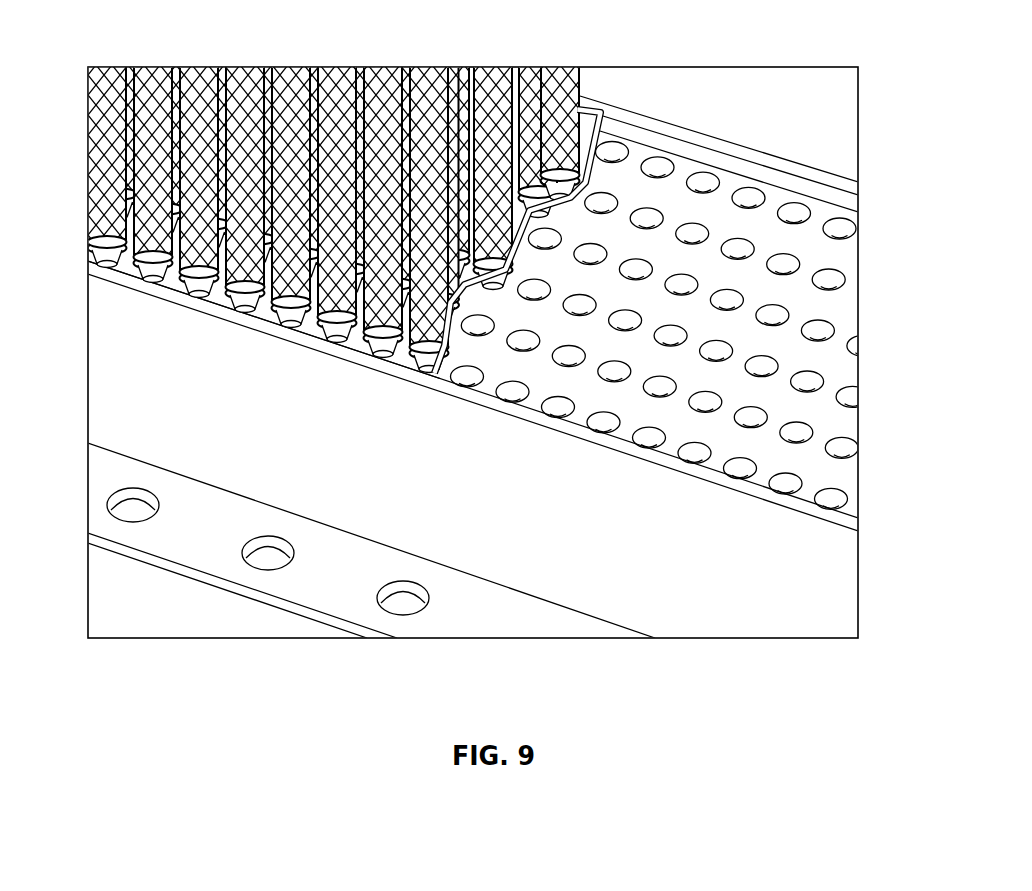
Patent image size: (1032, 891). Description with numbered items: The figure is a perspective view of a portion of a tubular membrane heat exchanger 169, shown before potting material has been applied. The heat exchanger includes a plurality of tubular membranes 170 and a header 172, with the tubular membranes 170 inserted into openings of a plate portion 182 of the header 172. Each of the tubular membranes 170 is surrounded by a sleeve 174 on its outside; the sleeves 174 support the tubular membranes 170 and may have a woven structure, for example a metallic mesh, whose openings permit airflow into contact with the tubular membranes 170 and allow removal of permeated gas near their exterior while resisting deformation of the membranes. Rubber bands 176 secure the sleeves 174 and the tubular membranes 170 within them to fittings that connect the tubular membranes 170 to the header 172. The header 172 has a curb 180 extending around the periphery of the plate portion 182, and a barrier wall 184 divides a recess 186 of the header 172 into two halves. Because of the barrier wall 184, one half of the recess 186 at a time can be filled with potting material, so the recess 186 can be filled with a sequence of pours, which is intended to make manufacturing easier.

The tubular membrane heat exchanger 169 is at (777, 52).
The tubular membranes 170 is at (604, 58).
The header 172 is at (373, 497).
The sleeves 174 is at (580, 115).
The rubber bands 176 is at (427, 360).
The curb 180 is at (257, 321).
The plate portion 182 is at (690, 425).
The barrier wall 184 is at (520, 273).
The recess 186 is at (805, 412).